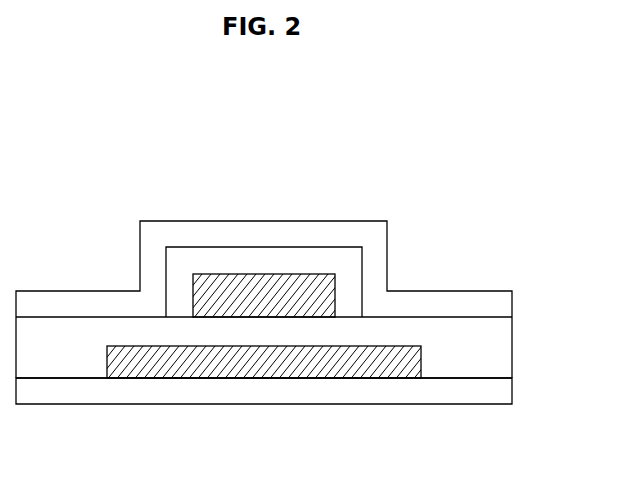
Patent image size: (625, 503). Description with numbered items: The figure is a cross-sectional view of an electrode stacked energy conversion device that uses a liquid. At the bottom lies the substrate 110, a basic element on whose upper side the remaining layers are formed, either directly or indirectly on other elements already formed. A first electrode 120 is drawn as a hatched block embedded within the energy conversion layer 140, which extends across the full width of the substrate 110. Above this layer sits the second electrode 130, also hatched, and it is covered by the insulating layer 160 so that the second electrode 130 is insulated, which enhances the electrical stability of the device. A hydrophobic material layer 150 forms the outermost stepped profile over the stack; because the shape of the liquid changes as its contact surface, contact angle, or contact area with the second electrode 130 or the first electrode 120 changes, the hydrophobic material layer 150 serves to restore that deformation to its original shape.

The substrate 110 is at (503, 392).
The first electrode 120 is at (395, 373).
The second electrode 130 is at (308, 273).
The energy conversion layer 140 is at (503, 340).
The hydrophobic material layer 150 is at (503, 302).
The insulating layer 160 is at (225, 260).